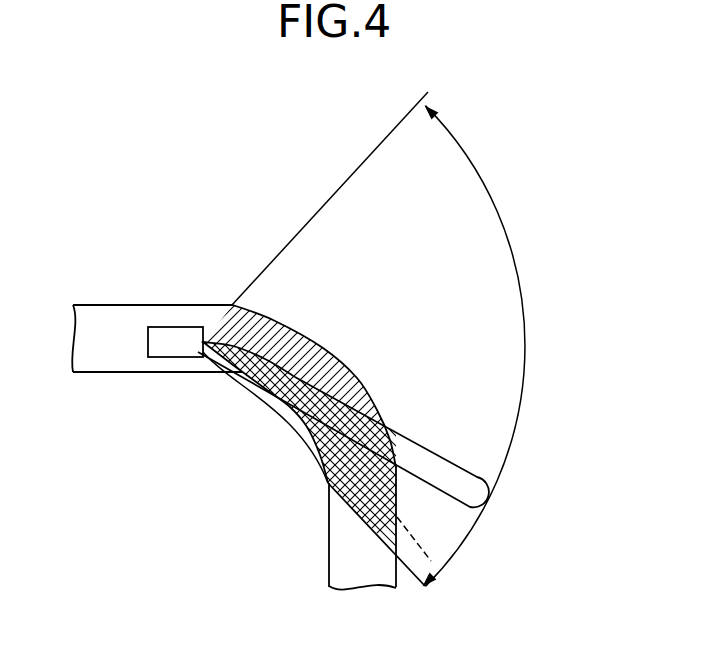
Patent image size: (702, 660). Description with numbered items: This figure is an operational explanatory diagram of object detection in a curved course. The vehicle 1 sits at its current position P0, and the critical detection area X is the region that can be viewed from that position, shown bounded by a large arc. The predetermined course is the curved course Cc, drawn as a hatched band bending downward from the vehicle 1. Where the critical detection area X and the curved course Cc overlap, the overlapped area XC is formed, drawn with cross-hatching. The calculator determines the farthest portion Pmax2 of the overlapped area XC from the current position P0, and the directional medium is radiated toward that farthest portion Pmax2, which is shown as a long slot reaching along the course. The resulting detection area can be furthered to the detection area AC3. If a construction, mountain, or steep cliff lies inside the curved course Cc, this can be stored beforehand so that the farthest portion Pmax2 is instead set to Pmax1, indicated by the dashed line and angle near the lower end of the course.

The vehicle 1 is at (173, 357).
The current position of the vehicle P0 is at (203, 345).
The curved course Cc is at (263, 323).
The overlapped area XC is at (347, 372).
The critical detection area X is at (517, 268).
The farthest portion of the overlapped area Pmax2 is at (395, 462).
The alternative farthest portion Pmax1 is at (397, 551).
The detection area AC3 is at (357, 513).